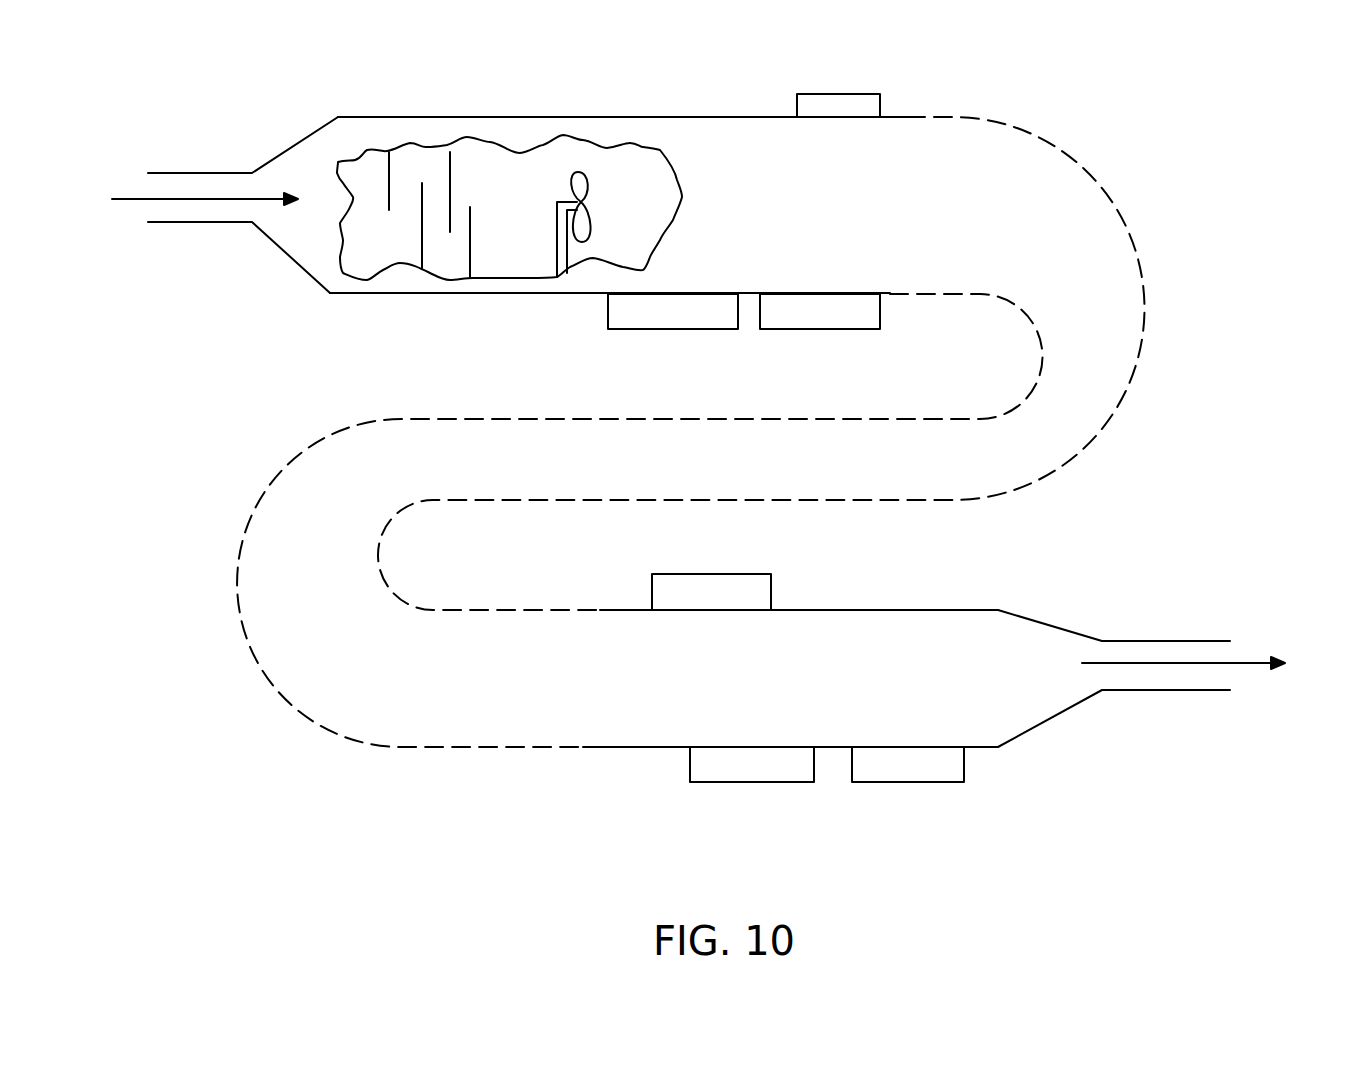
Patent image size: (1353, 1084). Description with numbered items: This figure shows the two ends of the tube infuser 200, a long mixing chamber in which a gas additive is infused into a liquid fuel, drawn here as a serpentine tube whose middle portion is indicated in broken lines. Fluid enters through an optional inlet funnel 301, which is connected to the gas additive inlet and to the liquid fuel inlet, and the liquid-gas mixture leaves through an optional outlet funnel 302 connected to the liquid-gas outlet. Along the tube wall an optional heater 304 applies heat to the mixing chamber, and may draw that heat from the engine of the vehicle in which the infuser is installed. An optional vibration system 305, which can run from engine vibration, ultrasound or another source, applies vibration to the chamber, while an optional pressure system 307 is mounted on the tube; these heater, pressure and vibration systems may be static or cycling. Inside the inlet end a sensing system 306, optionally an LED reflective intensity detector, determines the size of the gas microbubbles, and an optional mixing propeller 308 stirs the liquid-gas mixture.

The tube infuser 200 is at (718, 116).
The inlet funnel 301 is at (315, 163).
The outlet funnel 302 is at (1030, 708).
The heater 304 is at (693, 313).
The vibration system 305 is at (820, 313).
The sensing system 306 is at (477, 174).
The pressure system 307 is at (847, 100).
The mixing propeller 308 is at (578, 188).